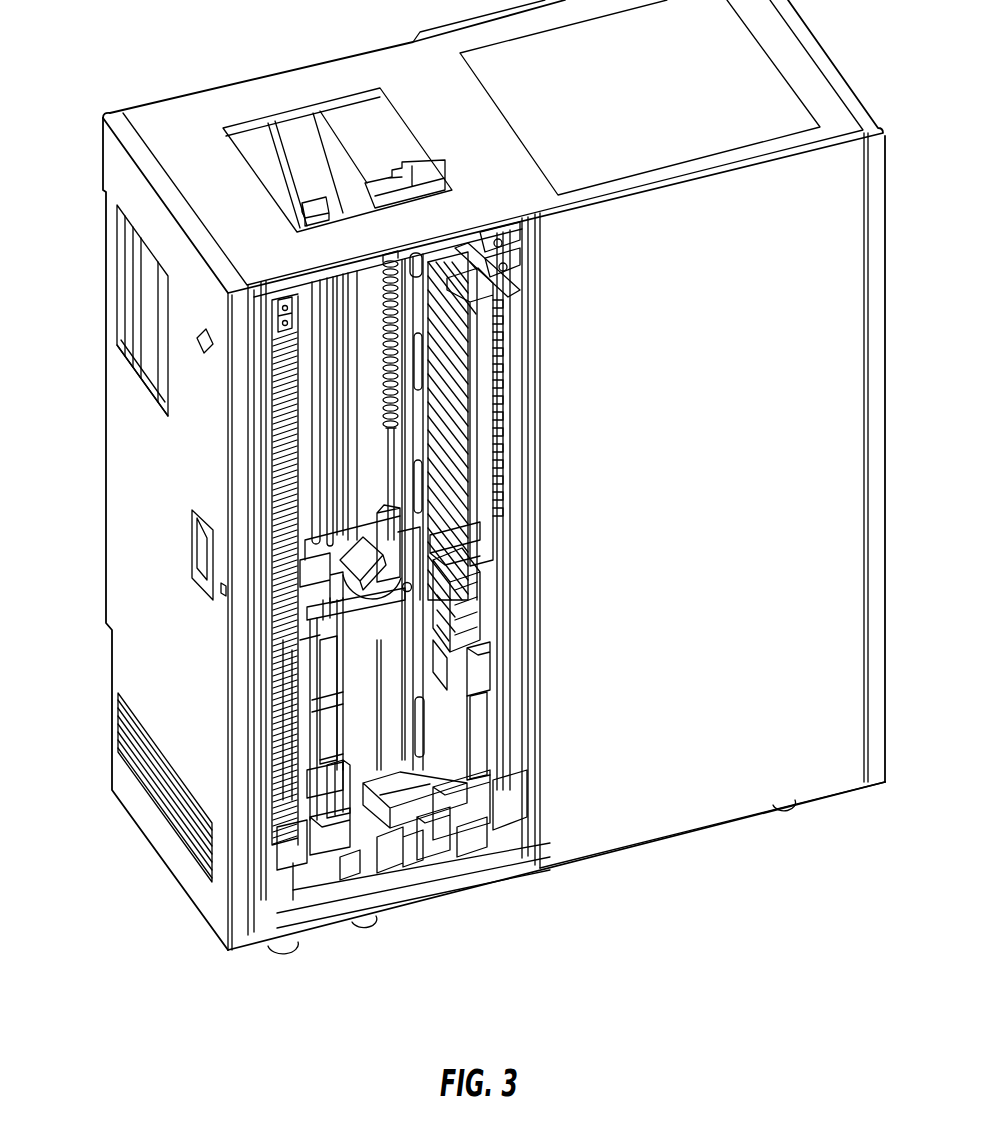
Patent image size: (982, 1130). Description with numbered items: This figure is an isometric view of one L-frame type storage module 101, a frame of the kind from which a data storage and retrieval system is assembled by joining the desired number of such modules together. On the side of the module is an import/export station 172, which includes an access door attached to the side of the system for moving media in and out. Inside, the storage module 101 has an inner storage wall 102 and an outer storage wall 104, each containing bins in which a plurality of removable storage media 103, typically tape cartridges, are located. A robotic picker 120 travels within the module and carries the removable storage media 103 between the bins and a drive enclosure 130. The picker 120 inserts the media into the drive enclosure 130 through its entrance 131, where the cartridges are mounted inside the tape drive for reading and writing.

The storage module 101 is at (206, 116).
The import/export station 172 is at (157, 303).
The inner storage wall 102 is at (473, 378).
The removable storage media 103 is at (448, 447).
The picker 120 is at (376, 609).
The entrance 131 is at (446, 640).
The drive enclosure 130 is at (474, 668).
The outer storage wall 104 is at (287, 800).